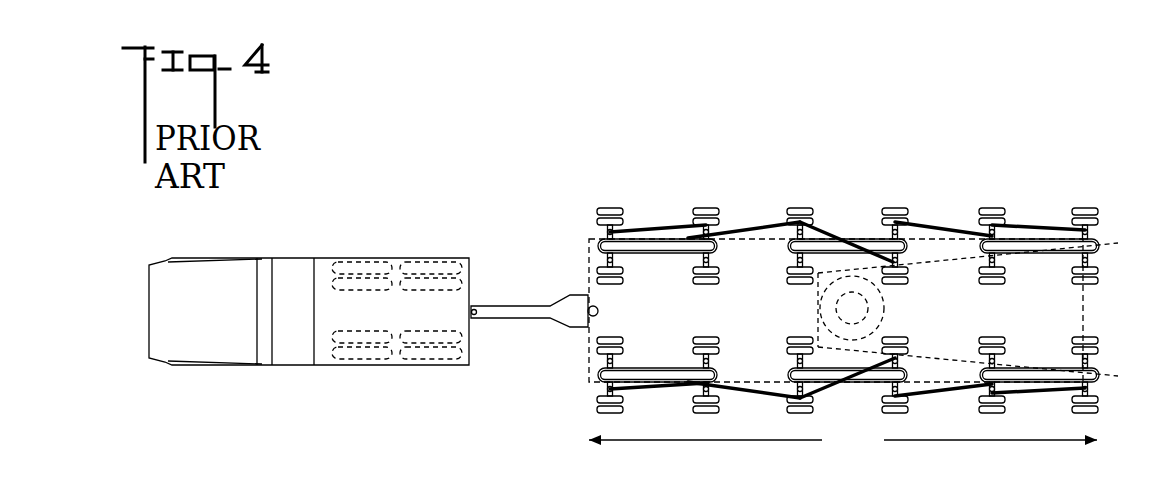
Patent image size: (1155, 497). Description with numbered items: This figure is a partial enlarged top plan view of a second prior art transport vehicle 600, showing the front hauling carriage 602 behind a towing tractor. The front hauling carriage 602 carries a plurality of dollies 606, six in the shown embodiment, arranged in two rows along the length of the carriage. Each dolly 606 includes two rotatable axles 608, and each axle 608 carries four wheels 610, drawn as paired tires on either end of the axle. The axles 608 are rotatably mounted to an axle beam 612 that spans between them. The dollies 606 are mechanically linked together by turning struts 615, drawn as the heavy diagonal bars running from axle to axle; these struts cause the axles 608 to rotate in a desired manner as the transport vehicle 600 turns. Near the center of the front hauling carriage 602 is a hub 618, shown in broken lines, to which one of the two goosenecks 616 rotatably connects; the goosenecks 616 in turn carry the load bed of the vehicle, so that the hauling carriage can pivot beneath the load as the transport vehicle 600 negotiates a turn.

The transport vehicle 600 is at (559, 183).
The front hauling carriage 602 is at (843, 442).
The dolly 606 is at (690, 191).
The rotatable axle 608 is at (605, 268).
The wheel 610 is at (604, 221).
The axle beam 612 is at (636, 250).
The turning strut 615 is at (751, 229).
The gooseneck 616 is at (948, 262).
The hub 618 is at (849, 303).